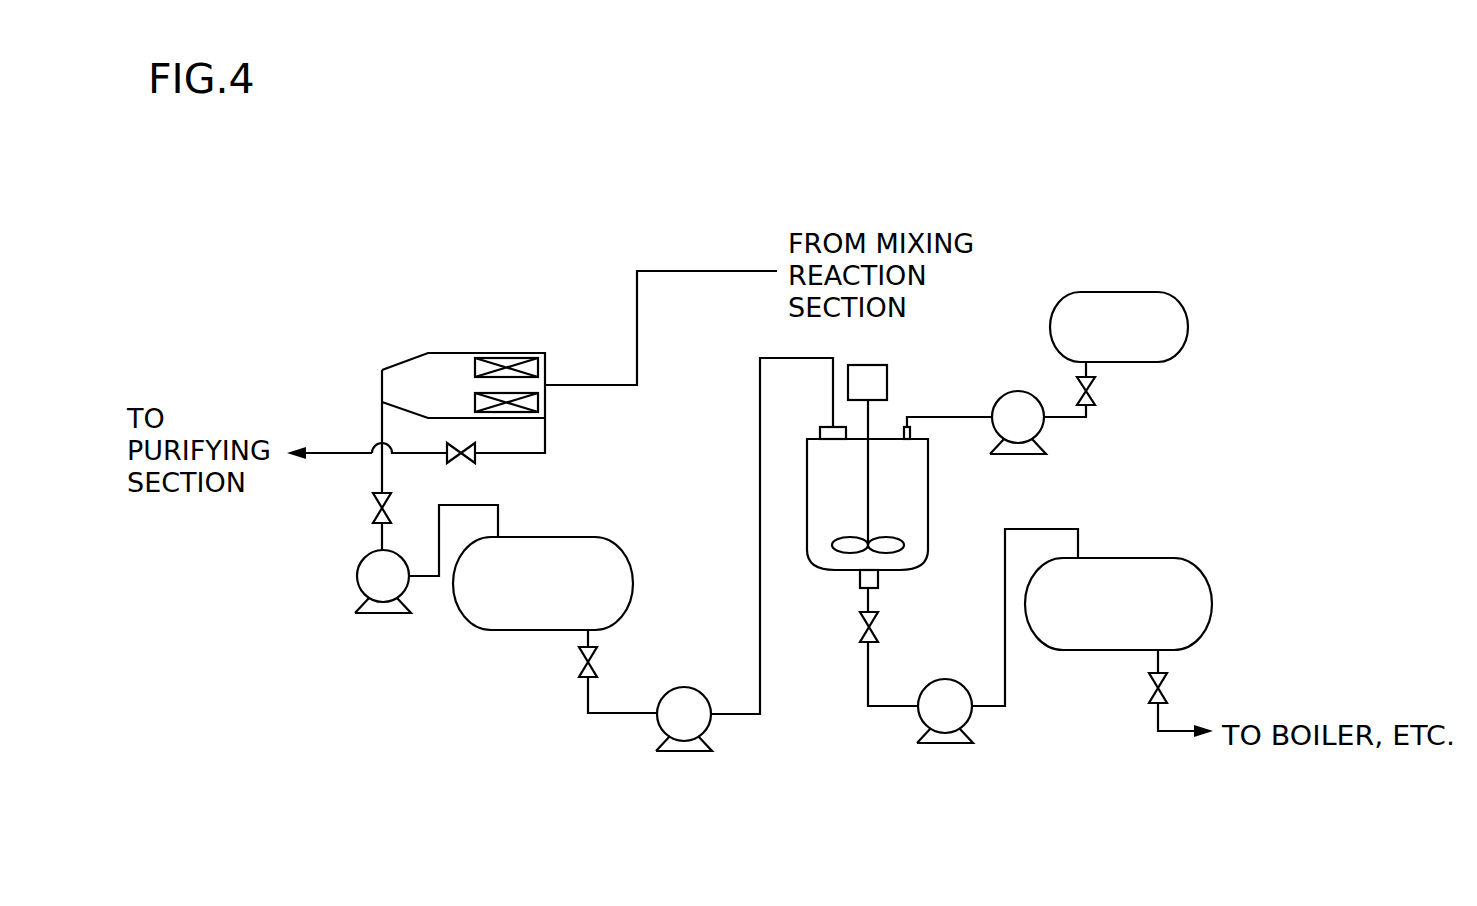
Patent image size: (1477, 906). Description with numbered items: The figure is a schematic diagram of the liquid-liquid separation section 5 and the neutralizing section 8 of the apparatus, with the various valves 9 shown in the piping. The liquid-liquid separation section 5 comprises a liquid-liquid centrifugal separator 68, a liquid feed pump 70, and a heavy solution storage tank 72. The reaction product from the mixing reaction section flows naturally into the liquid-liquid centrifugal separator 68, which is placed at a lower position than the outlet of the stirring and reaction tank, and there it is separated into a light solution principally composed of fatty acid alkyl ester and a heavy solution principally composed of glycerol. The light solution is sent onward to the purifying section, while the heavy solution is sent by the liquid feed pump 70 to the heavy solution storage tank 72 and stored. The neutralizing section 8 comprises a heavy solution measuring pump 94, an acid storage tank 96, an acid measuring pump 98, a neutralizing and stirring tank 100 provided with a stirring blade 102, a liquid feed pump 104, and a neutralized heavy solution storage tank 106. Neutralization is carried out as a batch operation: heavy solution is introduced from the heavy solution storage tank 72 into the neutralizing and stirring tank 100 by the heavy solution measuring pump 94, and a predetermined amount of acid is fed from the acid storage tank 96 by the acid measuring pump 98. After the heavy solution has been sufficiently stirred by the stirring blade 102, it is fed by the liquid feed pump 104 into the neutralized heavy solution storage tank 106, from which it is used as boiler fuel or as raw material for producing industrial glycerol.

The liquid-liquid separation section 5 is at (495, 262).
The neutralizing section 8 is at (1007, 260).
The valves 9 is at (470, 460).
The liquid-liquid centrifugal separator 68 is at (428, 363).
The liquid feed pump 70 is at (357, 576).
The heavy solution storage tank 72 is at (626, 576).
The heavy solution measuring pump 94 is at (700, 720).
The acid storage tank 96 is at (1178, 332).
The acid measuring pump 98 is at (1020, 391).
The neutralizing and stirring tank 100 is at (918, 499).
The stirring blade 102 is at (894, 548).
The liquid feed pump 104 is at (960, 712).
The neutralized heavy solution storage tank 106 is at (1197, 604).